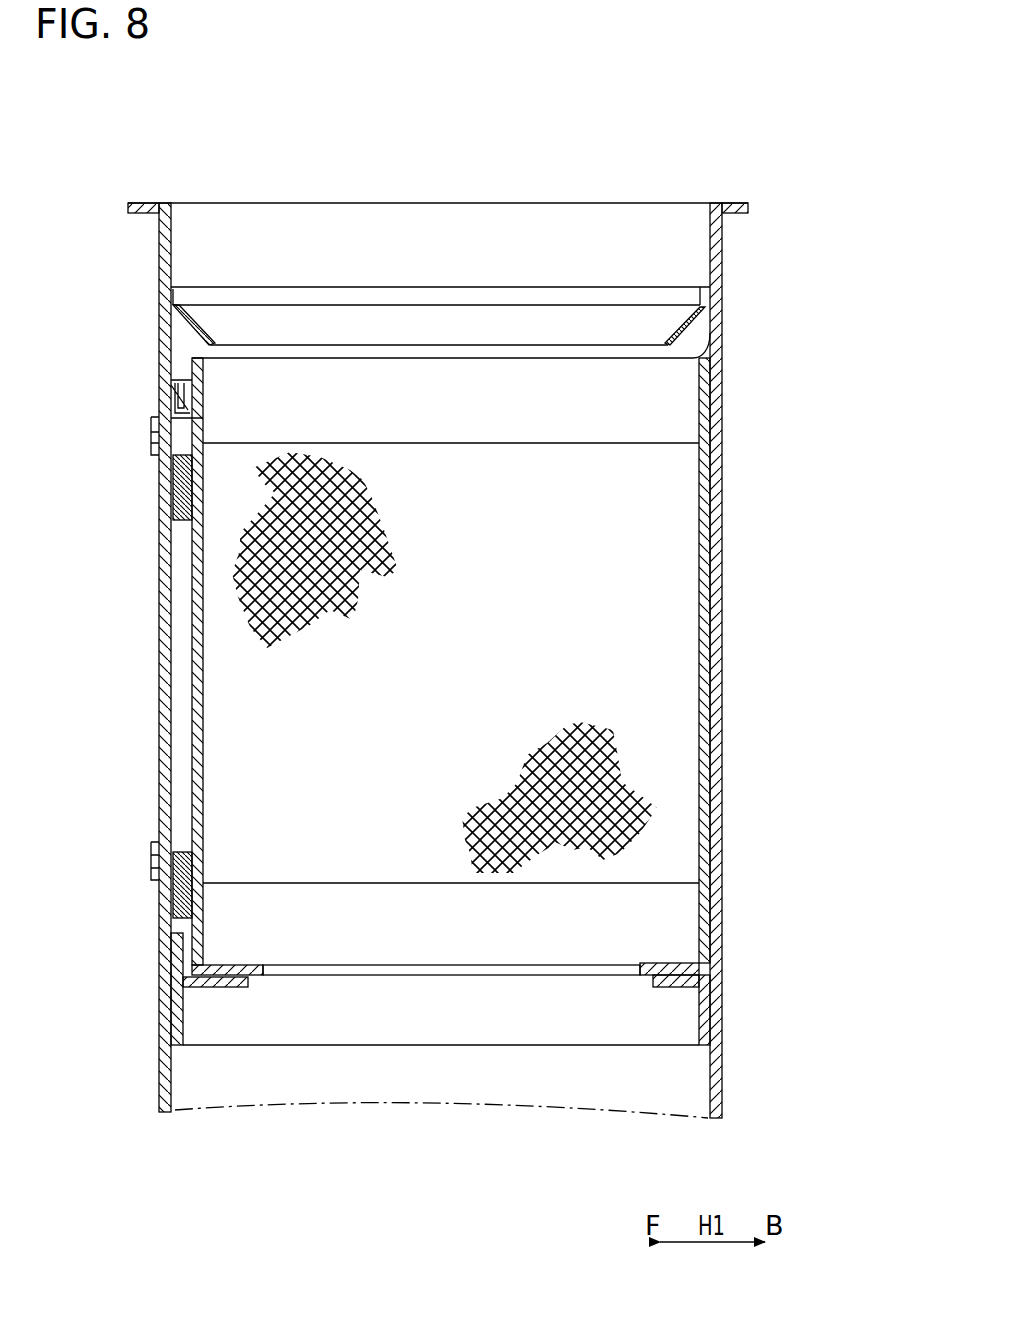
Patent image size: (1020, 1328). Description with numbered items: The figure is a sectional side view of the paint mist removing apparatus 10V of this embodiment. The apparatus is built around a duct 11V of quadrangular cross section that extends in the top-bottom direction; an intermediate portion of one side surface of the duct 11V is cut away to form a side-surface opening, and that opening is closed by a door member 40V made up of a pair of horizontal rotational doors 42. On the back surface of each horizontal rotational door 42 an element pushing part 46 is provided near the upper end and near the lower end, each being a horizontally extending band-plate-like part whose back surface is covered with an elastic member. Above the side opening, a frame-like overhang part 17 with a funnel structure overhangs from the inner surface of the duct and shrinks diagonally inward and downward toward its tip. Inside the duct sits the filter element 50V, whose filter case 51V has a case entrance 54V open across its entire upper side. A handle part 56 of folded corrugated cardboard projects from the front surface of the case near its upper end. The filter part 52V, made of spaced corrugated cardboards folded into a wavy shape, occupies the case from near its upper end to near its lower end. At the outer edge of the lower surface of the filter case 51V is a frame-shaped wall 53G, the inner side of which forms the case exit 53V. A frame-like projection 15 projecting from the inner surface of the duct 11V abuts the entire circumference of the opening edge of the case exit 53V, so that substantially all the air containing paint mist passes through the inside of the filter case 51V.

The paint mist removing apparatus 10V is at (214, 142).
The duct 11V is at (726, 262).
The frame-like projection 15 is at (704, 993).
The frame-like overhang part 17 is at (202, 330).
The door member 40V is at (157, 668).
The horizontal rotational door 42 is at (164, 578).
The element pushing part 46 is at (173, 488).
The handle part 56 is at (172, 384).
The filter element 50V is at (583, 350).
The filter case 51V is at (704, 667).
The filter part 52V is at (664, 556).
The case exit 53V is at (628, 978).
The frame-shaped wall 53G is at (670, 964).
The case entrance 54V is at (709, 337).